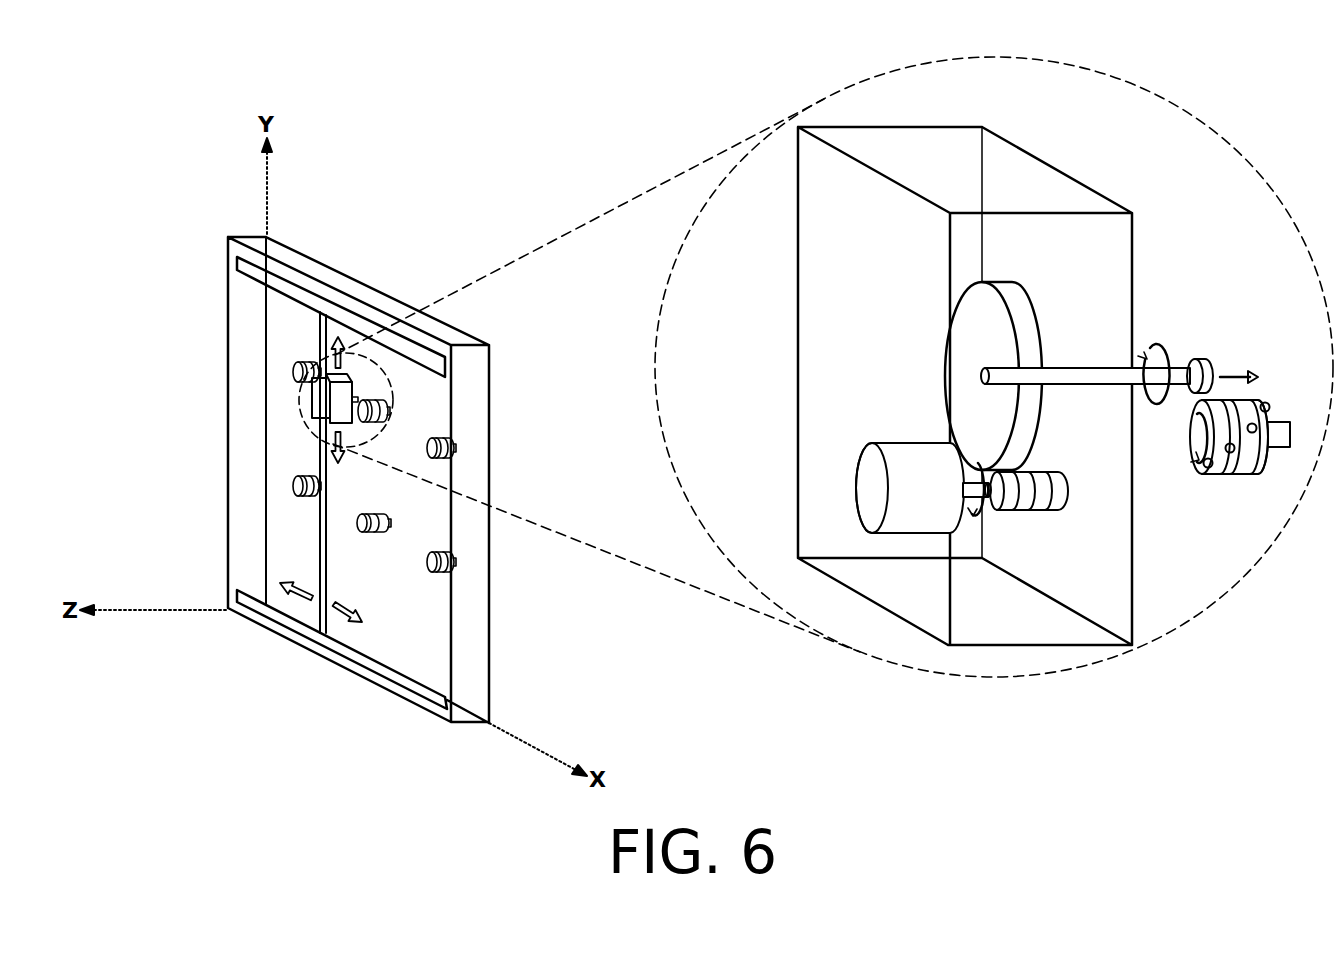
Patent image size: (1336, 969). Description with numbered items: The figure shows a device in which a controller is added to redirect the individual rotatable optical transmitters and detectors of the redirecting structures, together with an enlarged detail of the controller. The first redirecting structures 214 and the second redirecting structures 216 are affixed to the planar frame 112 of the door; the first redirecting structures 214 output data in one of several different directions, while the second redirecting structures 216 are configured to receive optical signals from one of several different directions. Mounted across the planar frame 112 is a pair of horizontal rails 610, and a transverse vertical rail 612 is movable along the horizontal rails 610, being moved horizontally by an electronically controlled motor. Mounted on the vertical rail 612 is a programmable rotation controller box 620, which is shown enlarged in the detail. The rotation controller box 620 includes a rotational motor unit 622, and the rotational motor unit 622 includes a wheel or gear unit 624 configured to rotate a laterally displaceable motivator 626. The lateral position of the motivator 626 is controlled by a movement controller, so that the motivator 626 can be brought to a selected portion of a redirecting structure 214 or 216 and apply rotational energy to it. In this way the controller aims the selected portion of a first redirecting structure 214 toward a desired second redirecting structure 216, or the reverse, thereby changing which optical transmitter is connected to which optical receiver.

The planar frame 112 is at (228, 567).
The horizontal rails 610 is at (295, 286).
The transverse vertical rail 612 is at (317, 582).
The programmable rotation controller box 620 is at (378, 426).
The first redirecting structure 214 is at (446, 438).
The second redirecting structure 216 is at (318, 476).
The rotational motor unit 622 is at (912, 443).
The wheel or gear unit 624 is at (1056, 511).
The laterally displaceable motivator 626 is at (1046, 369).